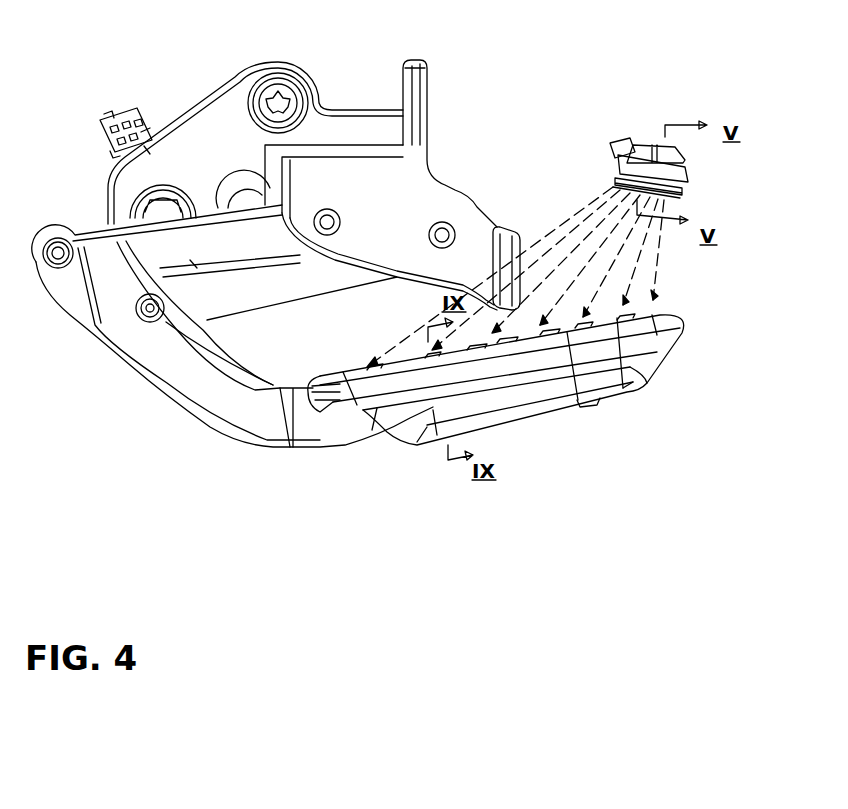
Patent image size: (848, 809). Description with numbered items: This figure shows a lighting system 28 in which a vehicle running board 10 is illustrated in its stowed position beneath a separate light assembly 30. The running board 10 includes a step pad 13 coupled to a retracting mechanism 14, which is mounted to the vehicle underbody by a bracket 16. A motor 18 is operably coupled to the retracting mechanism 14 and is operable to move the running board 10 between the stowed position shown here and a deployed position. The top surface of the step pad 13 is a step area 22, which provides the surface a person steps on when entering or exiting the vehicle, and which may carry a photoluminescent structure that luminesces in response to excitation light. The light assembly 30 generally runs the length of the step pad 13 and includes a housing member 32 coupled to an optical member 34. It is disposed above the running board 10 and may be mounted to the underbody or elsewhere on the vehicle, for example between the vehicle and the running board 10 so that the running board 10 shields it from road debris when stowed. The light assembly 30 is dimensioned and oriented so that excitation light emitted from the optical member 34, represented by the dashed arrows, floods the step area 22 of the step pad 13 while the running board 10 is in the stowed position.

The running board 10 is at (683, 363).
The step pad 13 is at (435, 410).
The retracting mechanism 14 is at (170, 360).
The bracket 16 is at (423, 197).
The motor 18 is at (217, 123).
The step area 22 is at (658, 308).
The lighting system 28 is at (555, 122).
The light assembly 30 is at (646, 132).
The housing member 32 is at (687, 163).
The optical member 34 is at (680, 197).